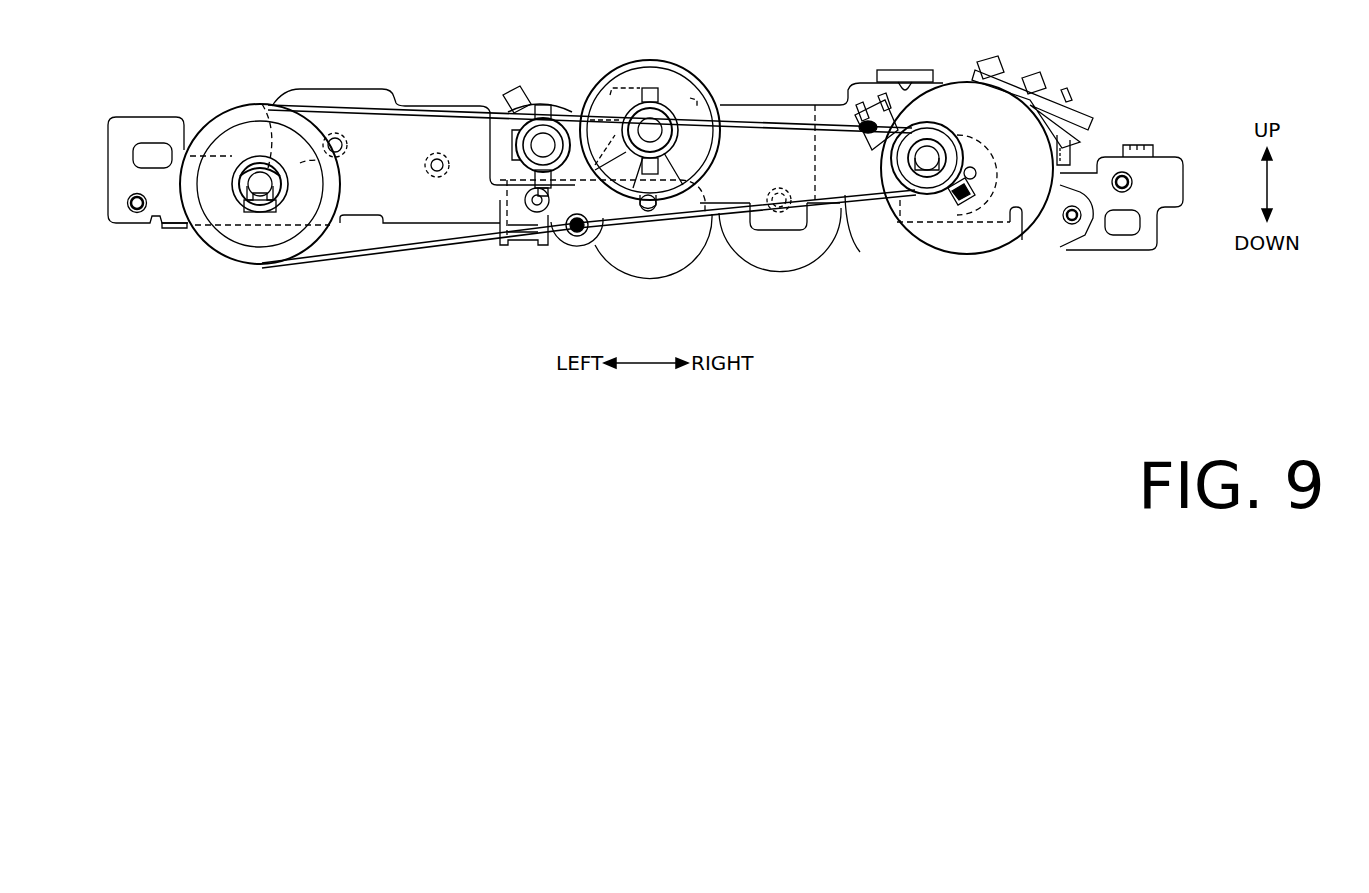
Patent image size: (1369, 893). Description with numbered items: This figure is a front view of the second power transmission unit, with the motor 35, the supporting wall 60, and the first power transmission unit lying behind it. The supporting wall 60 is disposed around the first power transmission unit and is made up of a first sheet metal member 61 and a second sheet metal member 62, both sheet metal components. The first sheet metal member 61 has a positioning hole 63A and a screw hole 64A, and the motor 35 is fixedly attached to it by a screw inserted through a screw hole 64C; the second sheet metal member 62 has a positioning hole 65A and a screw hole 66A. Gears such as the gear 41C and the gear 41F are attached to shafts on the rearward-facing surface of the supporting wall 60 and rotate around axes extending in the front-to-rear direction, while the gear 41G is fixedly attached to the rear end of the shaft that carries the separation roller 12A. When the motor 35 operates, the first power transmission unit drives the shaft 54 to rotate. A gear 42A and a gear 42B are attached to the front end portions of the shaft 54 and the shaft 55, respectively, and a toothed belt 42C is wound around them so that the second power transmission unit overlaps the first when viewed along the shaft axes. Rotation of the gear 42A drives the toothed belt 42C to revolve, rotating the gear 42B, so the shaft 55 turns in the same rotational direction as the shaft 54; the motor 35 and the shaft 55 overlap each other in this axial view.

The separation roller 12A is at (648, 66).
The motor 35 is at (972, 252).
The gear 41C is at (783, 262).
The gear 41F is at (648, 262).
The gear 41G is at (545, 118).
The gear 42A is at (262, 105).
The gear 42B is at (929, 148).
The toothed belt 42C is at (748, 127).
The shaft 54 is at (262, 190).
The shaft 55 is at (927, 162).
The supporting wall 60 is at (459, 93).
The first sheet metal member 61 is at (790, 104).
The second sheet metal member 62 is at (360, 103).
The positioning hole 63A is at (1124, 222).
The screw hole 64A is at (1122, 180).
The screw hole 64C is at (1072, 217).
The positioning hole 65A is at (150, 155).
The screw hole 66A is at (136, 205).